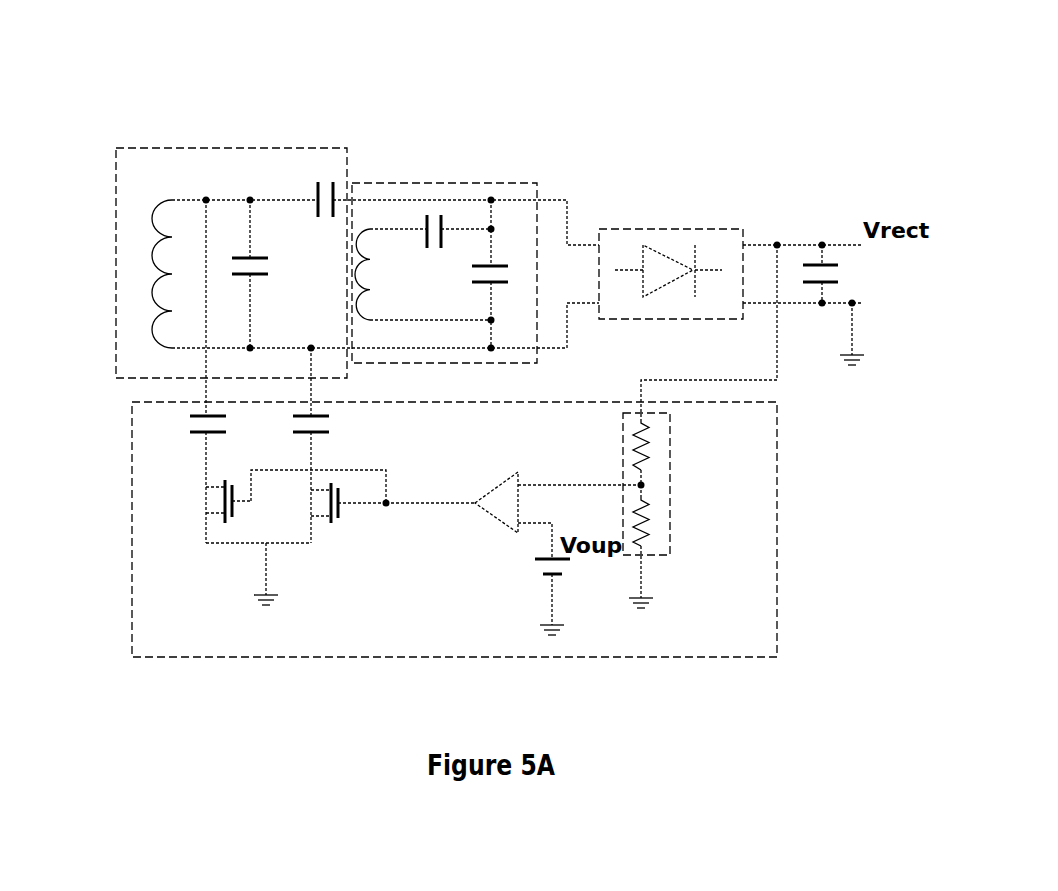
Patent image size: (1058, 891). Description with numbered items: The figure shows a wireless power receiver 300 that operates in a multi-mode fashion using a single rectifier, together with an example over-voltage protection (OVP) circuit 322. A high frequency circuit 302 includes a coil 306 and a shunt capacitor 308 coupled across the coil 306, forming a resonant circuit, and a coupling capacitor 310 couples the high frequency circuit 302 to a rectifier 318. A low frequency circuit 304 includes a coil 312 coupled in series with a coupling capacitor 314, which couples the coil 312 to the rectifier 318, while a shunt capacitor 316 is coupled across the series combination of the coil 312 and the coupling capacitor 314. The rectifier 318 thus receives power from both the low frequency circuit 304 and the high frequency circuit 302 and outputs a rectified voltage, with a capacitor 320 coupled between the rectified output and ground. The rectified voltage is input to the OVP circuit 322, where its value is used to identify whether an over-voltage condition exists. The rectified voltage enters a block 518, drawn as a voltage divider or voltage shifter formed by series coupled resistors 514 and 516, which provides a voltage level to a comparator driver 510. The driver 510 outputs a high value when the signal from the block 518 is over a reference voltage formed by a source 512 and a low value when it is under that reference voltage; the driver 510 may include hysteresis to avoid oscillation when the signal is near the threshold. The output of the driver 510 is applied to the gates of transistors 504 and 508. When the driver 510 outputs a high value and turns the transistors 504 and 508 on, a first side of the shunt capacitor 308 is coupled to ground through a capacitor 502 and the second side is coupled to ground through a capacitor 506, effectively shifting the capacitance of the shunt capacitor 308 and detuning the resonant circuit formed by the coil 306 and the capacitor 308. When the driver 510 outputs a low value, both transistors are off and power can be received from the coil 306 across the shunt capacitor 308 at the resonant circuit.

The wireless power receiver system 300 is at (97, 83).
The high frequency circuit 302 is at (181, 181).
The low frequency circuit 304 is at (465, 192).
The coil 306 is at (163, 275).
The shunt capacitor 308 is at (268, 273).
The coupling capacitor 310 is at (315, 190).
The coil 312 is at (423, 274).
The coupling capacitor 314 is at (427, 237).
The shunt capacitor 316 is at (506, 292).
The rectifier 318 is at (641, 235).
The capacitor 320 is at (838, 266).
The over-voltage protection circuit 322 is at (708, 632).
The capacitor 502 is at (203, 435).
The transistor 504 is at (215, 507).
The capacitor 506 is at (327, 416).
The transistor 508 is at (317, 507).
The comparator driver 510 is at (502, 480).
The source 512 is at (537, 567).
The resistor 514 is at (648, 467).
The resistor 516 is at (647, 540).
The block 518 is at (623, 452).